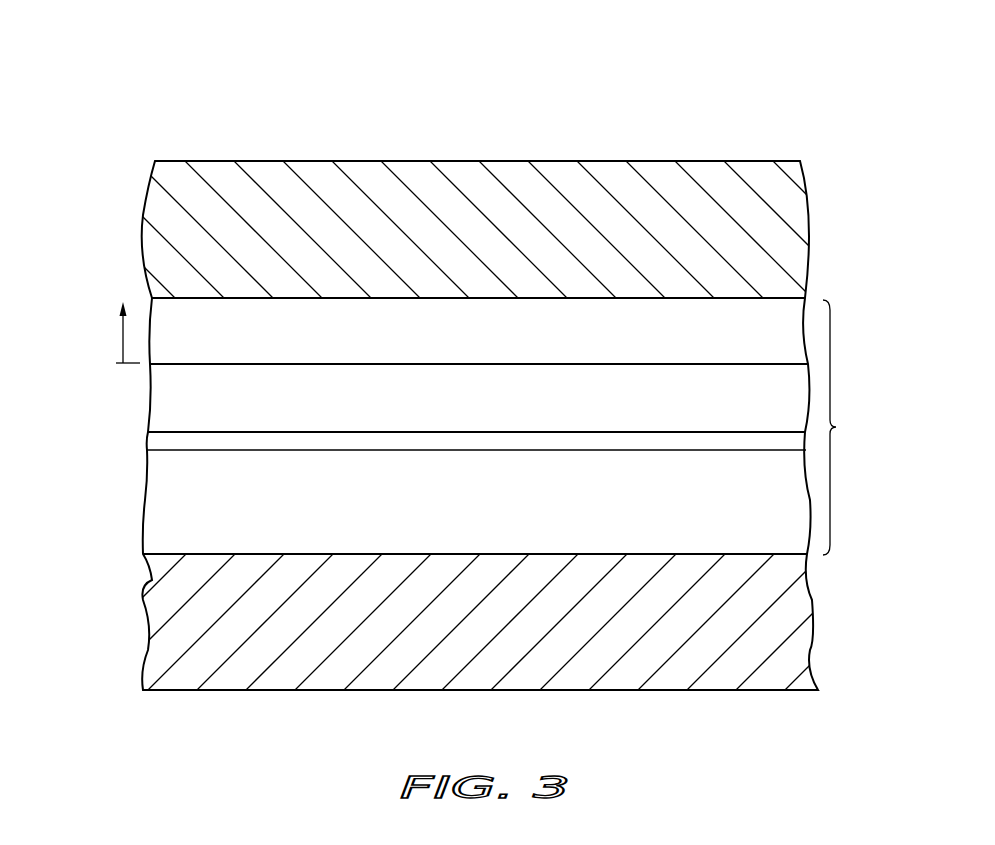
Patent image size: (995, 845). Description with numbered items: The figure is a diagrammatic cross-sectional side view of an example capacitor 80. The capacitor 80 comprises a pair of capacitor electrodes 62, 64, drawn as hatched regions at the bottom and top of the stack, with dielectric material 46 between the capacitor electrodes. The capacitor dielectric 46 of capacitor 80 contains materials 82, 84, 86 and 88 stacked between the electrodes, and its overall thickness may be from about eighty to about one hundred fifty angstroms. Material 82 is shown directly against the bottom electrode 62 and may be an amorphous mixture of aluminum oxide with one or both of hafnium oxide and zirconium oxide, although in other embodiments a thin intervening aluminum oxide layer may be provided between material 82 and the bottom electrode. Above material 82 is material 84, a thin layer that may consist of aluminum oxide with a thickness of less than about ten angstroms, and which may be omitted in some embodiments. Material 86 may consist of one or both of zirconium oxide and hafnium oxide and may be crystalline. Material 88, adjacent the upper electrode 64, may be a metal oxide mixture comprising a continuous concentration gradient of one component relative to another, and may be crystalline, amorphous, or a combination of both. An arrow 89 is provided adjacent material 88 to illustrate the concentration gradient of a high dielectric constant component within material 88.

The capacitor 80 is at (752, 108).
The capacitor electrode 64 is at (617, 226).
The bottom electrode 62 is at (619, 630).
The material 88 is at (231, 342).
The material 86 is at (231, 409).
The material 84 is at (163, 440).
The material 82 is at (231, 511).
The dielectric material 46 is at (848, 427).
The arrow 89 is at (122, 337).